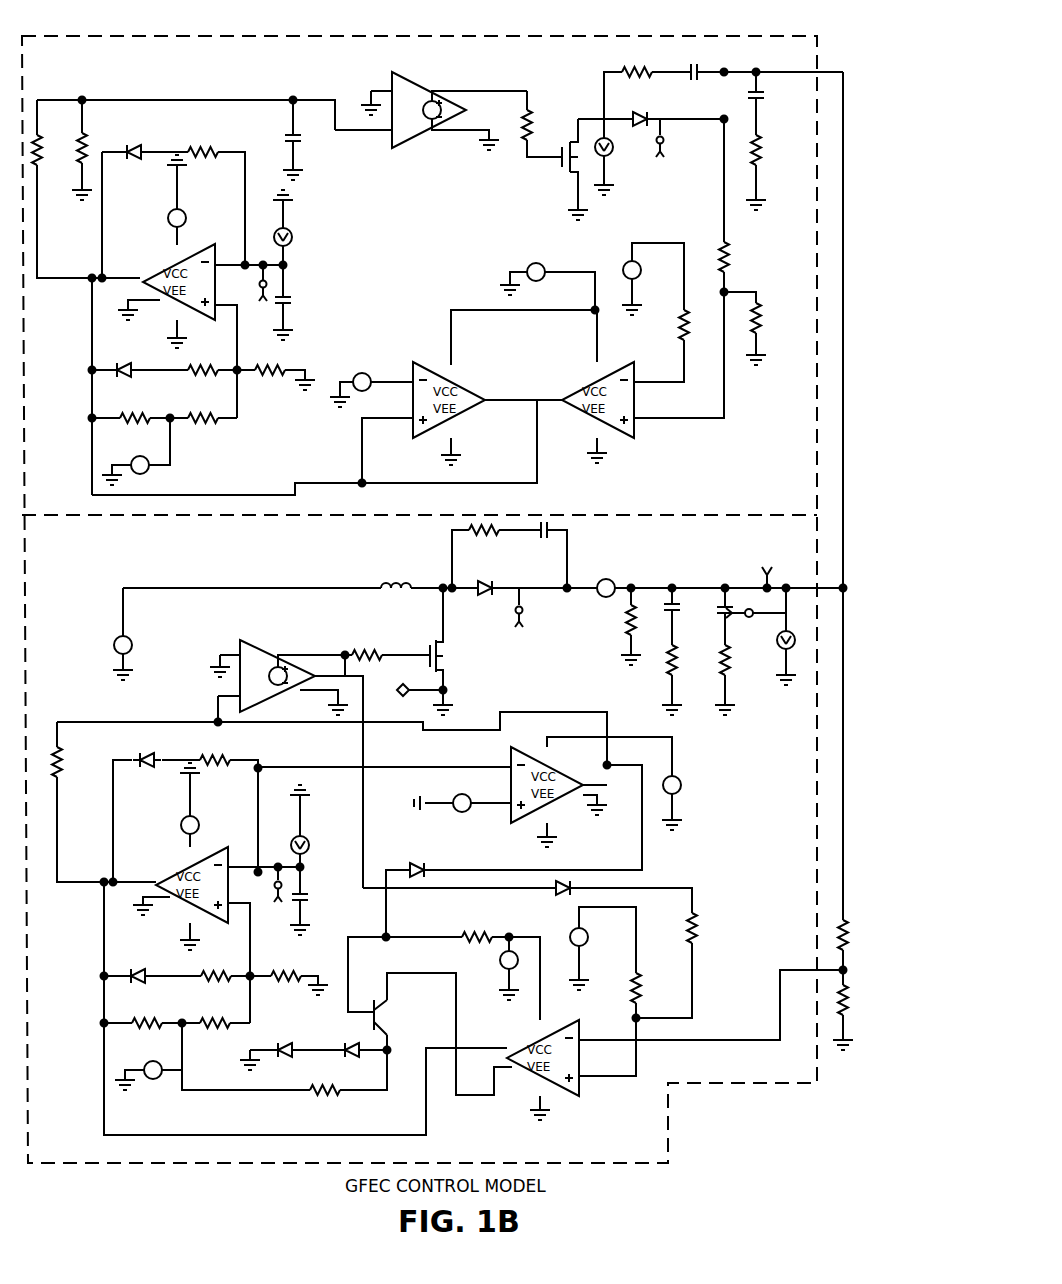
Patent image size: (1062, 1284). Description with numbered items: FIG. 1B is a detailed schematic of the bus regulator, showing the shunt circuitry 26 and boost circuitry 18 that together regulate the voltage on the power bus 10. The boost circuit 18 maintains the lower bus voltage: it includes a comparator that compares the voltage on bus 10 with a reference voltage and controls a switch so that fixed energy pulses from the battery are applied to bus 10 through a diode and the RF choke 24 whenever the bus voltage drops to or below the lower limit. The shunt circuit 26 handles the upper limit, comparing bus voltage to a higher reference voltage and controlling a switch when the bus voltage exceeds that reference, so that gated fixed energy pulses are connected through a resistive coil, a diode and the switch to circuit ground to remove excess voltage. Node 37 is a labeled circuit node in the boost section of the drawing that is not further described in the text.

The power bus 10 is at (846, 95).
The shunt circuit 26 is at (437, 275).
The boost circuit 18 is at (439, 826).
The RF choke 24 is at (363, 133).
The node 37 is at (387, 664).